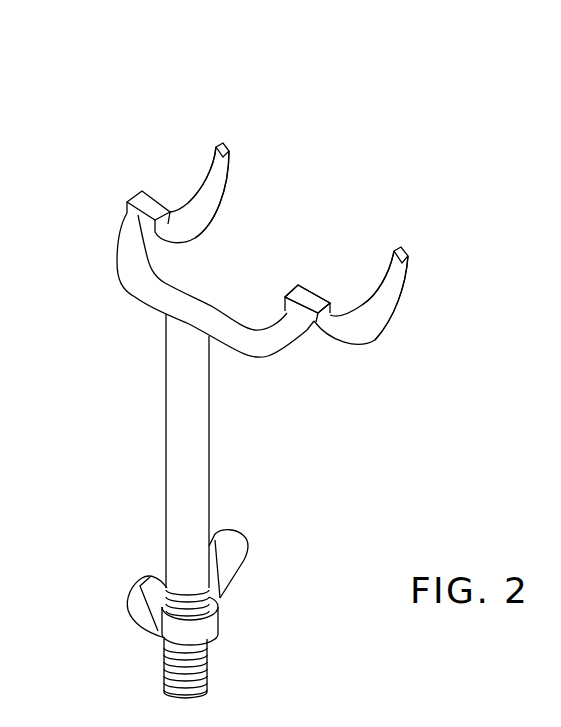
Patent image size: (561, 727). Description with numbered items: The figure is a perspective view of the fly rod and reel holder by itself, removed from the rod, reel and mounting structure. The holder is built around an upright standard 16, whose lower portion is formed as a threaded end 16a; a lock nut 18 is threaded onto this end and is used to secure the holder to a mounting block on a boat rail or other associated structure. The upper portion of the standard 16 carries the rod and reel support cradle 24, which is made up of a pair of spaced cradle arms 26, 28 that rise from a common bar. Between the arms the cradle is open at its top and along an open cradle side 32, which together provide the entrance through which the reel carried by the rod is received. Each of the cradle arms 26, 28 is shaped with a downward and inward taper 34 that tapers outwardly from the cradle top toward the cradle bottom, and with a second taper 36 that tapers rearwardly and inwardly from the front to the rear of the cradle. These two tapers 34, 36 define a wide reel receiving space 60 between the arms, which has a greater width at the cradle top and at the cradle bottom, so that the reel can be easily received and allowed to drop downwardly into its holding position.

The standard 16 is at (210, 465).
The threaded end 16a is at (208, 665).
The lock nut 18 is at (247, 558).
The rod and reel support cradle 24 is at (113, 280).
The cradle arm 26 is at (233, 145).
The cradle arm 28 is at (405, 307).
The open cradle side 32 is at (360, 207).
The downward and inward taper 34 is at (190, 207).
The second taper 36 is at (228, 201).
The reel receiving space 60 is at (303, 188).